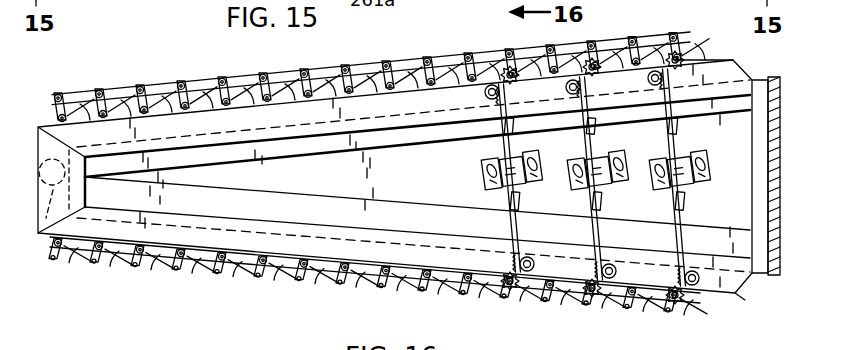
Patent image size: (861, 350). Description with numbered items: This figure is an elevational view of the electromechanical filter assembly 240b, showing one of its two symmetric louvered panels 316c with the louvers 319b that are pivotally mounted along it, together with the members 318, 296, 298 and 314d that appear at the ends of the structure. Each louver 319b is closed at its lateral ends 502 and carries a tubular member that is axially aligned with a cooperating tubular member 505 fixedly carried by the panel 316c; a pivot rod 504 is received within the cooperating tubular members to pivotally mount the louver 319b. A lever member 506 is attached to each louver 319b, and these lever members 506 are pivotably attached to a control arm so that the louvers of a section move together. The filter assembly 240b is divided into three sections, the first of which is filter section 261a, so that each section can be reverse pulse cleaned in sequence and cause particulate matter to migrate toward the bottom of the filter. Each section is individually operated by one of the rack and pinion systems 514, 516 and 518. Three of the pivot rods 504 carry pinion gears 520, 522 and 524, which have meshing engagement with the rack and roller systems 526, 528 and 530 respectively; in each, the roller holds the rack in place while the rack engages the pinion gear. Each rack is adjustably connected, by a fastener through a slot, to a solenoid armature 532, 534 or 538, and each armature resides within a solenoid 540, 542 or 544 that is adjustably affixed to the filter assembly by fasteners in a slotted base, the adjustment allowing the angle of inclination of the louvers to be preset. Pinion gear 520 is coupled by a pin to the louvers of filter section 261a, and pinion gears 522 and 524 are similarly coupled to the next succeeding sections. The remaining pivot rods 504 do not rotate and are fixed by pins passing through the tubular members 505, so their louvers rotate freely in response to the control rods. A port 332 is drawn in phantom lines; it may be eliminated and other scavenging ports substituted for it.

The elongated beam housing 318 is at (37, 143).
The port 332 is at (38, 236).
The filter section 261a is at (109, 87).
The filter assembly 240b is at (379, 245).
The tubular member 505 is at (152, 93).
The louver 319b is at (243, 86).
The lateral end 502 is at (283, 75).
The lever member 506 is at (313, 72).
The pivot rod 504 is at (388, 80).
The rack and pinion system 514 is at (463, 157).
The rack and pinion system 516 is at (581, 52).
The rack and pinion system 518 is at (670, 46).
The pinion gear 520 is at (511, 66).
The pinion gear 522 is at (589, 58).
The pinion gear 524 is at (685, 35).
The rack and roller system 526 is at (511, 243).
The rack and roller system 528 is at (598, 242).
The rack and roller system 530 is at (680, 258).
The solenoid 540 is at (489, 177).
The solenoid 542 is at (572, 163).
The solenoid armature 532 is at (500, 198).
The solenoid armature 534 is at (613, 190).
The solenoid 544 is at (703, 168).
The solenoid armature 538 is at (688, 200).
The louvered panel 316c is at (713, 60).
The end plate 296 is at (782, 86).
The end plate flange 298 is at (770, 277).
The frame member 314d is at (722, 300).